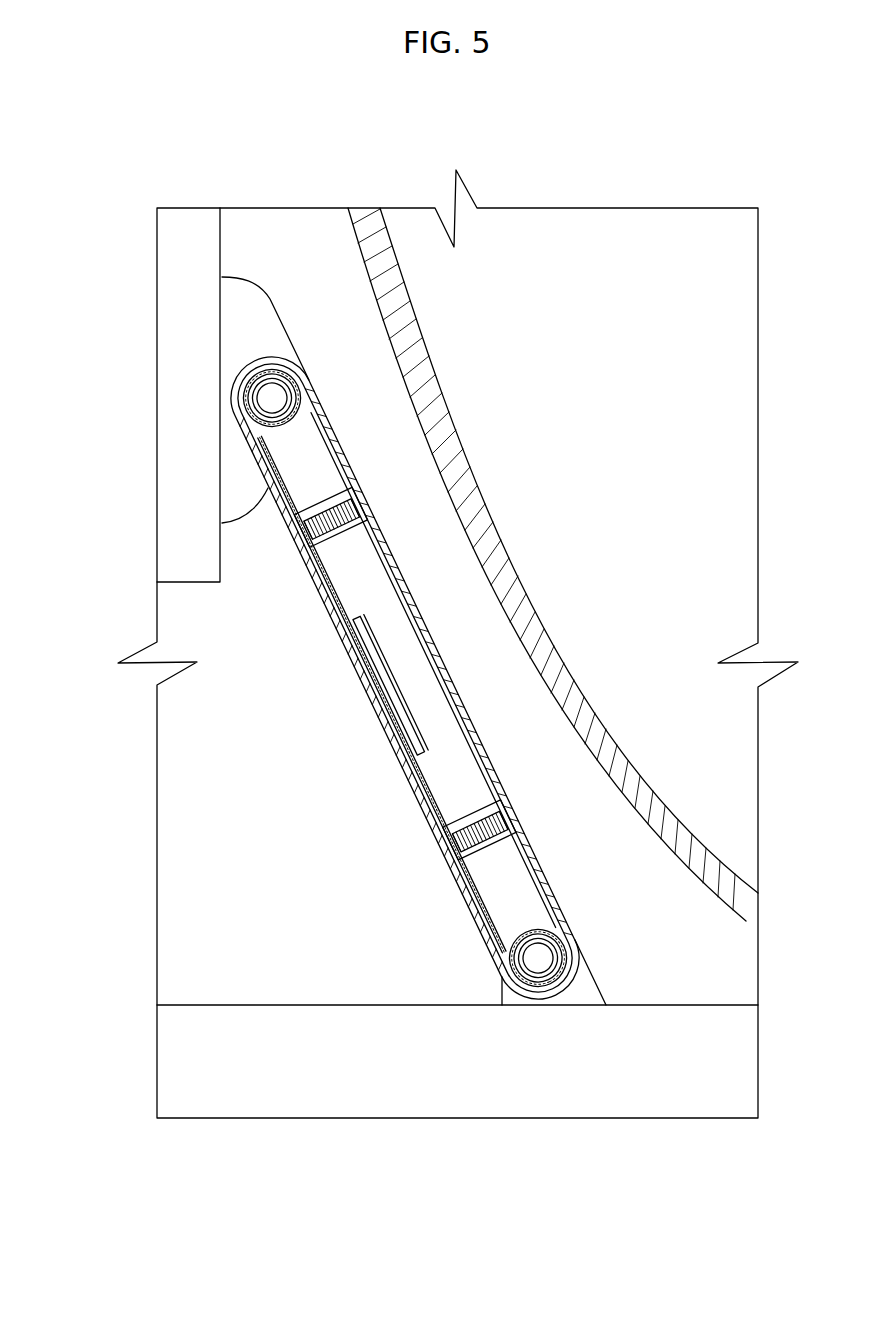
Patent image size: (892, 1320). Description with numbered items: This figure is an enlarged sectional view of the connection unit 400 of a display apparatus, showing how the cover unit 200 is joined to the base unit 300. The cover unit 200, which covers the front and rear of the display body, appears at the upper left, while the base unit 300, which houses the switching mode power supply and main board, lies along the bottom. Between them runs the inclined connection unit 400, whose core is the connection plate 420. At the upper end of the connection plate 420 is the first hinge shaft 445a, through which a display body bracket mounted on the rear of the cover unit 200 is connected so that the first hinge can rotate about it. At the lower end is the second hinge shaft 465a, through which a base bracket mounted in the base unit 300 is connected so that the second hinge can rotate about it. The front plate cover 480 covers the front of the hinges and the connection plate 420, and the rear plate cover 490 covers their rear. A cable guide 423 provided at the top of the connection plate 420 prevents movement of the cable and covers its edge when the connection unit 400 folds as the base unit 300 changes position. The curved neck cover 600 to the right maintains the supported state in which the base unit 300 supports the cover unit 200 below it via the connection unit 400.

The cover unit 200 is at (190, 226).
The base unit 300 is at (508, 1134).
The connection unit 400 is at (358, 770).
The connection plate 420 is at (370, 670).
The cable guide 423 is at (403, 710).
The first hinge shaft 445a is at (272, 400).
The second hinge shaft 465a is at (538, 960).
The front plate cover 480 is at (420, 610).
The rear plate cover 490 is at (348, 628).
The neck cover 600 is at (470, 446).